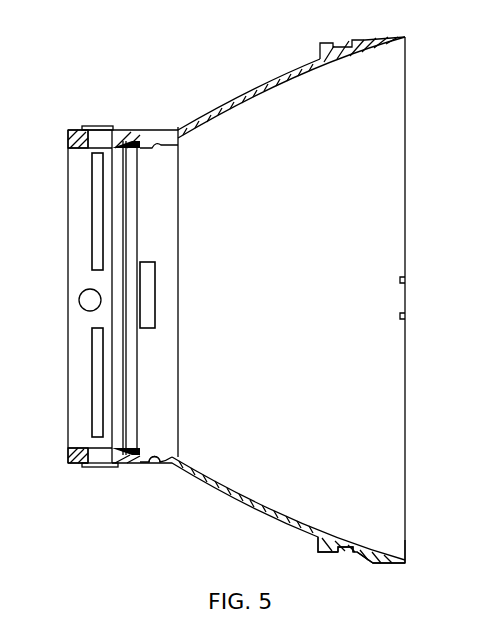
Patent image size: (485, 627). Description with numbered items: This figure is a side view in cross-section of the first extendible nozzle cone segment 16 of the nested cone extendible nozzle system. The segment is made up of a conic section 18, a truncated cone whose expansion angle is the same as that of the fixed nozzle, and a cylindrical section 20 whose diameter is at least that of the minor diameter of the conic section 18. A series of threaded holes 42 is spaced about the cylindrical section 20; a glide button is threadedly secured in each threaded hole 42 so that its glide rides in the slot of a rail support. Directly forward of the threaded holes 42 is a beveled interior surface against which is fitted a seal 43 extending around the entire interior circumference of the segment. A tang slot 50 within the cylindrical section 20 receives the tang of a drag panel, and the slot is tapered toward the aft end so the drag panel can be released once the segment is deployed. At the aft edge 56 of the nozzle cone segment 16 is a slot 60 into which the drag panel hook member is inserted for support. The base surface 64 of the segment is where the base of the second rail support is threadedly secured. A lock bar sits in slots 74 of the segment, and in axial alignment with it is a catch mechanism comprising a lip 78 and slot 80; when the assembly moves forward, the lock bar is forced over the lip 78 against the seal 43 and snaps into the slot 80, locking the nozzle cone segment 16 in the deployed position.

The first extendible nozzle cone segment 16 is at (238, 88).
The conic section 18 is at (300, 80).
The cylindrical section 20 is at (128, 128).
The threaded holes 42 is at (92, 300).
The seal 43 is at (123, 463).
The tang slot 50 is at (165, 463).
The aft edge 56 is at (410, 553).
The slot 60 is at (414, 281).
The base surface 64 is at (68, 135).
The slots 74 is at (98, 208).
The lip 78 is at (327, 551).
The slot 80 is at (346, 552).